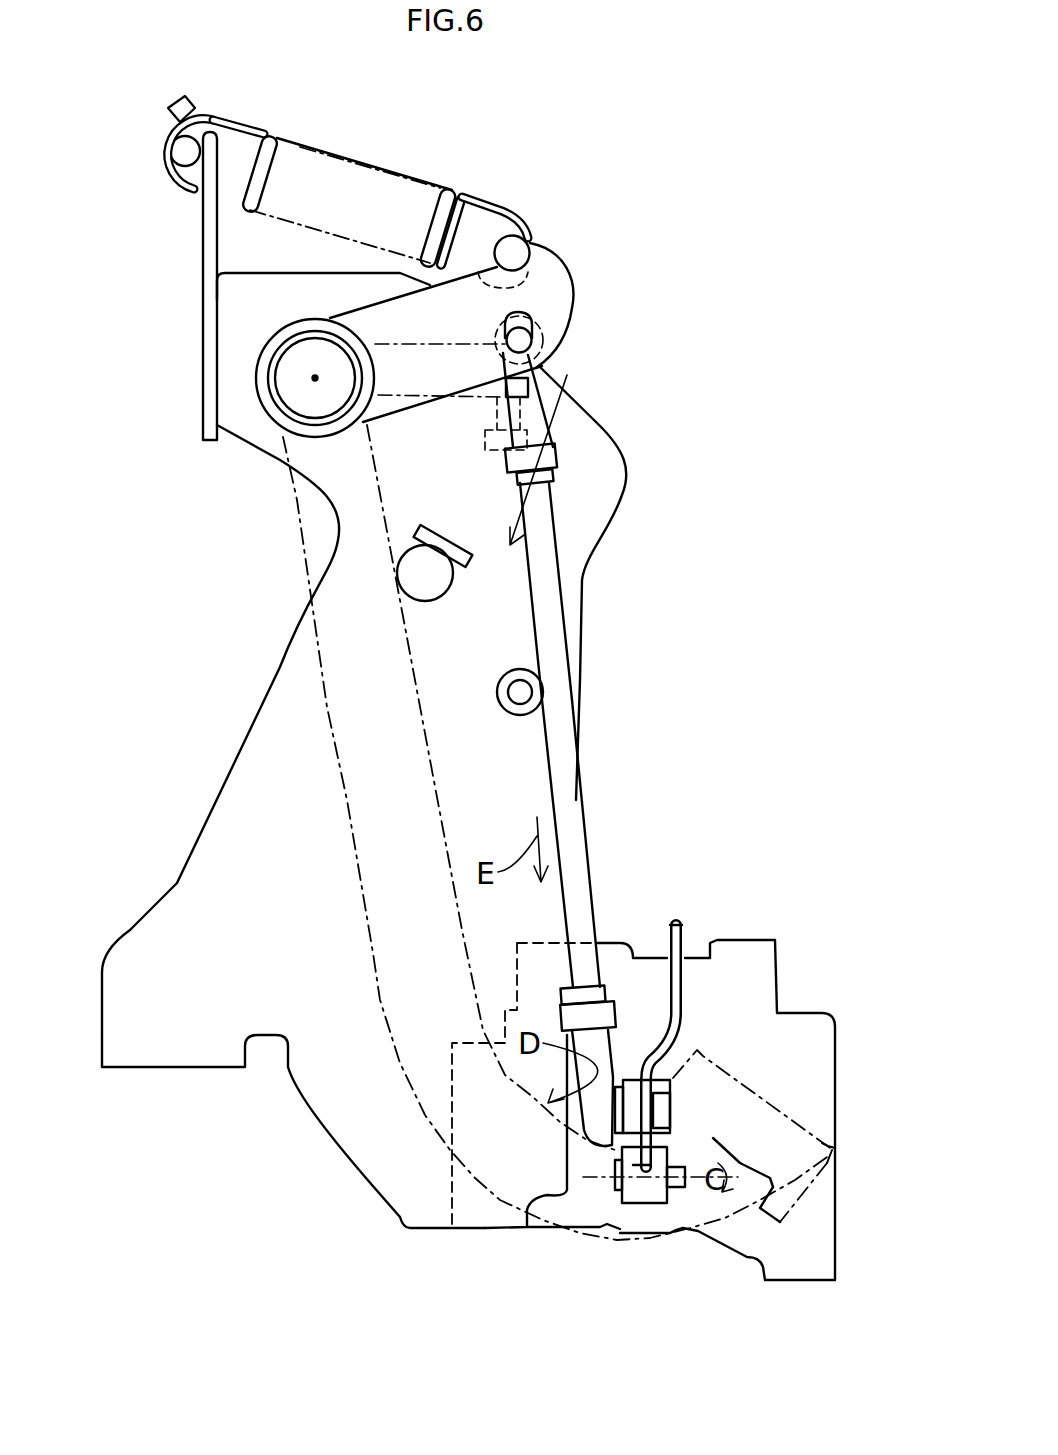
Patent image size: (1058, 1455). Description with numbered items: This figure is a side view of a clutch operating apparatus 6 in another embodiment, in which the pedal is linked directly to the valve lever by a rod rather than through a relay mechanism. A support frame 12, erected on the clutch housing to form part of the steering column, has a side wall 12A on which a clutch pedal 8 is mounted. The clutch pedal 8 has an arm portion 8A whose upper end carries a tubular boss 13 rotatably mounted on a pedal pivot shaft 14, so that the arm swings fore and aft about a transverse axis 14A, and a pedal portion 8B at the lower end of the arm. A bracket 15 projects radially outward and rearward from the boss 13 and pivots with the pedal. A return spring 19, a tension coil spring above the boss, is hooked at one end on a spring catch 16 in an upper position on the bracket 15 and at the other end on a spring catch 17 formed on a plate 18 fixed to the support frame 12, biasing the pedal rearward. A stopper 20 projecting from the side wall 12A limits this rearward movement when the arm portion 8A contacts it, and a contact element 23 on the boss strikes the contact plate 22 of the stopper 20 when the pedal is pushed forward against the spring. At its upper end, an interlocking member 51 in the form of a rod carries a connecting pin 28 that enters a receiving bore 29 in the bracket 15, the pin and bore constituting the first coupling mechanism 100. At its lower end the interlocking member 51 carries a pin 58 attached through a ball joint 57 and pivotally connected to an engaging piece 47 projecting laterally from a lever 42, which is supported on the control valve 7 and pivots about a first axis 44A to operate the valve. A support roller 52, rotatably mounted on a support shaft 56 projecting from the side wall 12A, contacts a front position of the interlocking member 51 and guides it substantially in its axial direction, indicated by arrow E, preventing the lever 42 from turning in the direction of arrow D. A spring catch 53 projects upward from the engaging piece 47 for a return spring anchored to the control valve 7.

The clutch operating apparatus 6 is at (658, 483).
The control valve 7 is at (693, 968).
The clutch pedal 8 is at (325, 724).
The arm portion 8A is at (347, 800).
The pedal portion 8B is at (790, 1063).
The support frame 12 is at (613, 420).
The side wall 12A is at (288, 700).
The tubular boss 13 is at (268, 345).
The pedal pivot shaft 14 is at (300, 425).
The transverse axis 14A is at (315, 378).
The bracket 15 is at (543, 290).
The spring catch 16 is at (512, 254).
The spring catch 17 is at (187, 150).
The plate 18 is at (206, 222).
The return spring 19 is at (468, 196).
The stopper 20 is at (431, 590).
The contact plate 22 is at (455, 535).
The contact element 23 is at (486, 456).
The connecting pin 28 is at (532, 340).
The receiving bore 29 is at (523, 314).
The lever 42 is at (640, 1195).
The first axis 44A is at (600, 1180).
The engaging piece 47 is at (640, 1090).
The interlocking member 51 is at (553, 608).
The support roller 52 is at (515, 714).
The spring catch 53 is at (674, 922).
The support shaft 56 is at (515, 693).
The ball joint 57 is at (588, 1137).
The pin 58 is at (673, 1112).
The first coupling mechanism 100 is at (616, 324).